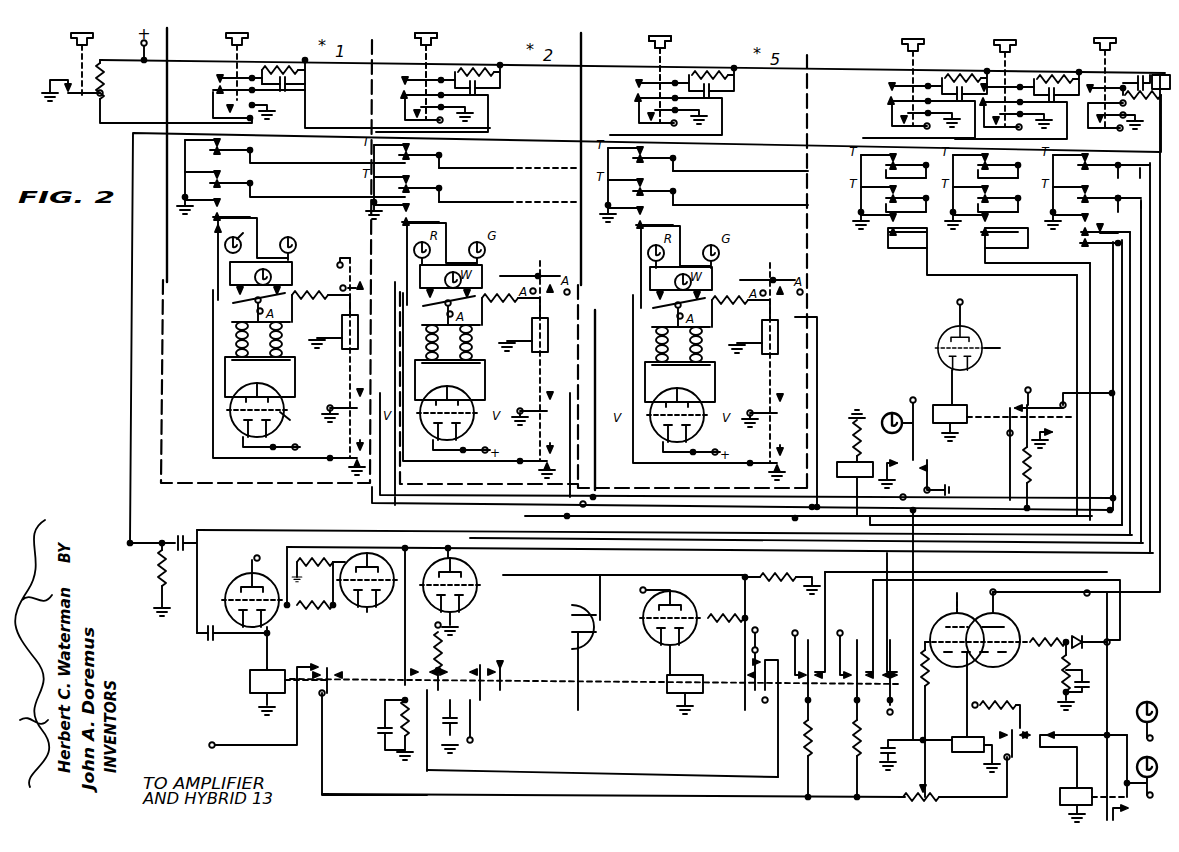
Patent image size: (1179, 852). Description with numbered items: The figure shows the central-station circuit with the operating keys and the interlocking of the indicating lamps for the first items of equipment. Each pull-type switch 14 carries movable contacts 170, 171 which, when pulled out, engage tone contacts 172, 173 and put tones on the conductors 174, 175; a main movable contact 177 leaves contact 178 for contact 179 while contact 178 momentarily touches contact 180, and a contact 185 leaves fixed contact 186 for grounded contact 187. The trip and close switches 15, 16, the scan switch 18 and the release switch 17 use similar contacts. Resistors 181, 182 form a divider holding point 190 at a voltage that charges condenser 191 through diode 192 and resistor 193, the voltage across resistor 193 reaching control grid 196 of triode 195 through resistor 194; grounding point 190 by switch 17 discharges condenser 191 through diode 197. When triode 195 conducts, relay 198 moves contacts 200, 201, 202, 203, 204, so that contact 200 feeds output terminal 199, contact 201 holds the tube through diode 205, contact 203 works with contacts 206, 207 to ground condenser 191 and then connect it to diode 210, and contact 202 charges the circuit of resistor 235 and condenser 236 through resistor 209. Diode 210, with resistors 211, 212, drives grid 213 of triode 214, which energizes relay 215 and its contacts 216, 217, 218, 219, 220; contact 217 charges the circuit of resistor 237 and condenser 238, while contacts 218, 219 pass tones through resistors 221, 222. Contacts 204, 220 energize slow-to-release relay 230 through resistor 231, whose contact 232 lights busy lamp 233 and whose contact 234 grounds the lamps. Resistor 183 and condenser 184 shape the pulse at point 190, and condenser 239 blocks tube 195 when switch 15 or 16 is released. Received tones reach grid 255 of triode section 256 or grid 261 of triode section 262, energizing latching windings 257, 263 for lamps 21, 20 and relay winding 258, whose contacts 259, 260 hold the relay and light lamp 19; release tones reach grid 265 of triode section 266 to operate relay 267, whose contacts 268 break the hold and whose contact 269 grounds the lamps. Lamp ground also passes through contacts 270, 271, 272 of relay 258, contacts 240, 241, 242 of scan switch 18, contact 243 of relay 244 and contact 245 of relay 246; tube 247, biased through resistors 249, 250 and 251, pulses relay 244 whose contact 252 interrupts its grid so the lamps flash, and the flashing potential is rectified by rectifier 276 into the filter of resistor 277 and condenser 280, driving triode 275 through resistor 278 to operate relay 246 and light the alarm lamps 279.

The switch 14 is at (243, 42).
The trip switch 15 is at (917, 54).
The close switch 16 is at (1007, 54).
The release switch 17 is at (72, 33).
The scan switch 18 is at (1110, 54).
The indicating lamp 19 is at (247, 277).
The indicating lamp 20 is at (226, 247).
The indicating lamp 21 is at (295, 247).
The movable contact 170 is at (636, 158).
The movable contact 171 is at (587, 192).
The contact 172 is at (970, 168).
The contact 173 is at (174, 178).
The conductor 174 is at (1142, 174).
The conductor 175 is at (1145, 197).
The main movable contact 177 is at (212, 91).
The contact 178 is at (208, 105).
The contact 179 is at (215, 77).
The contact 180 is at (257, 120).
The resistor 181 is at (106, 78).
The resistor 182 is at (158, 574).
The resistor 183 is at (290, 62).
The condenser 184 is at (300, 82).
The movable contact 185 is at (252, 216).
The fixed contact 186 is at (205, 236).
The contact 187 is at (183, 201).
The point 190 is at (151, 527).
The condenser 191 is at (188, 529).
The diode 192 is at (372, 568).
The resistor 193 is at (300, 566).
The resistor 194 is at (322, 609).
The triode 195 is at (286, 610).
The control grid 196 is at (232, 594).
The diode 197 is at (441, 575).
The relay 198 is at (260, 669).
The output terminal 199 is at (241, 719).
The movable contact 200 is at (330, 670).
The contact 201 is at (406, 670).
The contact 202 is at (442, 652).
The movable contact 203 is at (500, 662).
The contact 204 is at (514, 666).
The diode 205 is at (372, 614).
The contact 206 is at (494, 721).
The contact 207 is at (522, 684).
The resistor 209 is at (434, 626).
The diode 210 is at (593, 628).
The resistor 211 is at (790, 575).
The resistor 212 is at (733, 616).
The grid 213 is at (690, 606).
The triode 214 is at (664, 640).
The relay 215 is at (666, 687).
The contact 216 is at (745, 666).
The contact 217 is at (759, 706).
The contact 218 is at (800, 646).
The contact 219 is at (849, 650).
The contact 220 is at (891, 636).
The resistor 221 is at (812, 730).
The resistor 222 is at (853, 747).
The slow-to-release relay 230 is at (849, 486).
The resistor 231 is at (853, 440).
The contact 232 is at (942, 470).
The lamp 233 is at (908, 413).
The contact 234 is at (900, 484).
The resistor 235 is at (458, 734).
The condenser 236 is at (453, 772).
The resistor 237 is at (378, 746).
The condenser 238 is at (382, 722).
The condenser 239 is at (180, 634).
The contact 240 is at (1116, 219).
The contact 241 is at (1066, 216).
The contact 242 is at (1078, 240).
The contact 243 is at (1040, 728).
The relay 244 is at (962, 734).
The contact 245 is at (1134, 816).
The relay 246 is at (1060, 802).
The tube 247 is at (951, 628).
The resistor 249 is at (1006, 696).
The resistor 250 is at (934, 796).
The resistor 251 is at (1032, 462).
The contact 252 is at (1009, 728).
The grid 255 is at (228, 398).
The triode section 256 is at (228, 427).
The winding 257 is at (232, 339).
The relay winding 258 is at (344, 350).
The contact 259 is at (362, 288).
The contact 260 is at (338, 264).
The grid 261 is at (290, 420).
The triode section 262 is at (270, 392).
The winding 263 is at (280, 344).
The grid 265 is at (985, 342).
The triode section 266 is at (949, 341).
The relay 267 is at (959, 406).
The contacts 268 is at (1034, 402).
The contact 269 is at (1041, 446).
The contact 270 is at (343, 466).
The contact 271 is at (350, 440).
The contact 272 is at (342, 408).
The triode 275 is at (1000, 621).
The rectifier 276 is at (1085, 637).
The resistor 277 is at (1057, 666).
The resistor 278 is at (1056, 638).
The lamps 279 is at (1140, 698).
The condenser 280 is at (1098, 674).